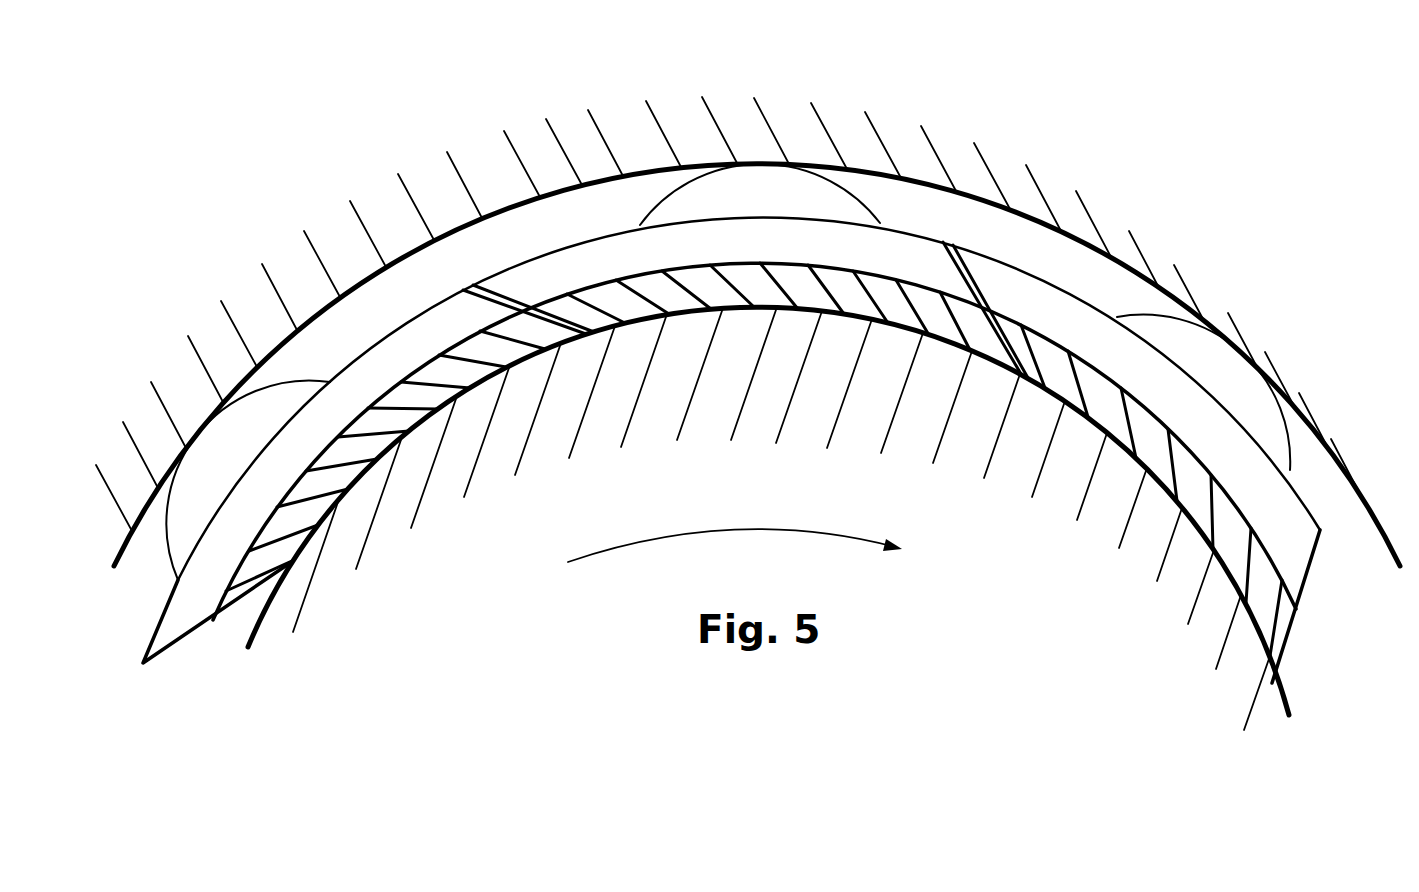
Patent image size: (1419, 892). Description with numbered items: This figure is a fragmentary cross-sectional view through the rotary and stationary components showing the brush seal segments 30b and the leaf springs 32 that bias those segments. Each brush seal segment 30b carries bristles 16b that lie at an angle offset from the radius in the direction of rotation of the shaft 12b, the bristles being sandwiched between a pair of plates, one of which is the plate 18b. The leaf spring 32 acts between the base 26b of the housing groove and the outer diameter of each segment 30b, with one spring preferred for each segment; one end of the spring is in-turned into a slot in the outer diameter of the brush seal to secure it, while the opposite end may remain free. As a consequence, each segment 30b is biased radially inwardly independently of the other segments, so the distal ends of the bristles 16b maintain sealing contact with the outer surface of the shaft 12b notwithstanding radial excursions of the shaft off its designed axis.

The shaft 12b is at (740, 305).
The bristles 16b is at (368, 438).
The plate 18b is at (283, 435).
The base of the groove 26b is at (347, 300).
The brush seal segments 30b is at (517, 272).
The leaf spring 32 is at (672, 193).